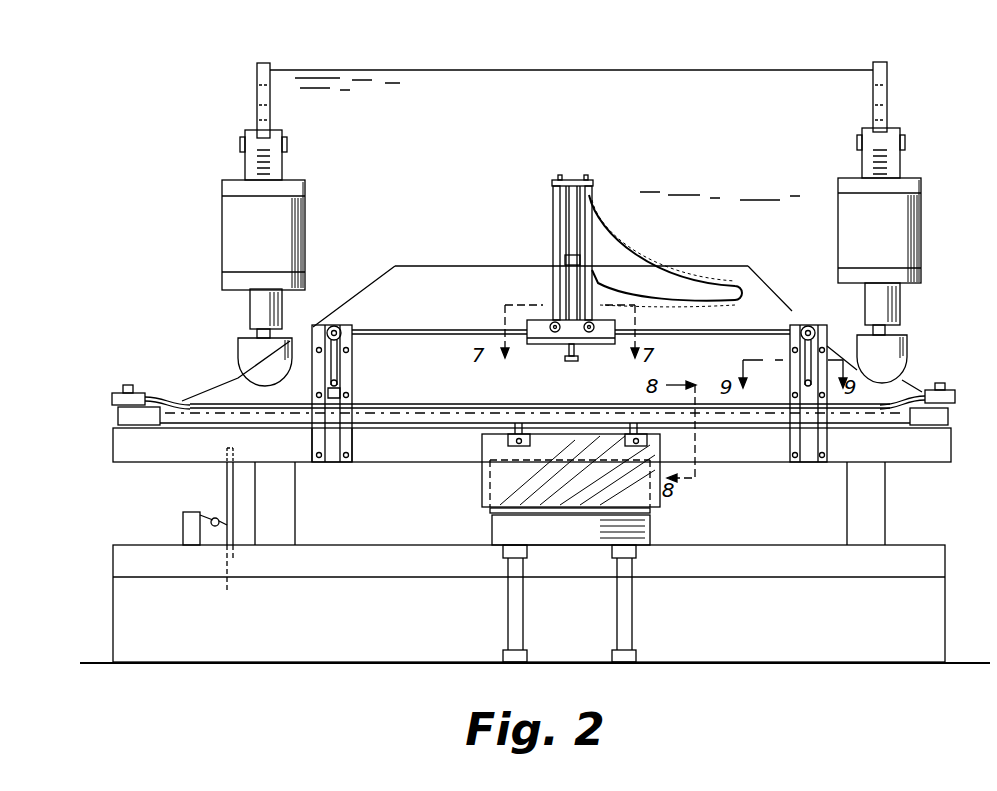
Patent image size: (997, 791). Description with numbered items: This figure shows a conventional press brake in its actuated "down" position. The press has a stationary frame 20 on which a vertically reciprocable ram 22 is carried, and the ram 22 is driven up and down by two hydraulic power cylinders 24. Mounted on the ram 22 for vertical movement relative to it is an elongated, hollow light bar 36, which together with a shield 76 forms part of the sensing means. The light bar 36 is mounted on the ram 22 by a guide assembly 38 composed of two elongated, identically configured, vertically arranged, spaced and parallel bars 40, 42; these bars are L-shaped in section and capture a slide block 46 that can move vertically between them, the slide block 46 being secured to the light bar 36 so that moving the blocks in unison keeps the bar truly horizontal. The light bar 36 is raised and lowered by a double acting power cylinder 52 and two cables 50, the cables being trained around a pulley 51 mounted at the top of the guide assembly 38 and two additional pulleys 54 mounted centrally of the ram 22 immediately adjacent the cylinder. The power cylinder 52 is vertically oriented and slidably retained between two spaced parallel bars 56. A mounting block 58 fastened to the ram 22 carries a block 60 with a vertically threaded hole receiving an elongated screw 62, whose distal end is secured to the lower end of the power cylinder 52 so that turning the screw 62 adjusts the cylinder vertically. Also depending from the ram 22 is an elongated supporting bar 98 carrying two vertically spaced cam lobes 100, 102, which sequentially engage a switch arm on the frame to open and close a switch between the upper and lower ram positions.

The stationary frame 20 is at (112, 597).
The ram 22 is at (420, 265).
The hydraulic power cylinders 24 is at (297, 215).
The light bar 36 is at (421, 408).
The guide assembly 38 is at (360, 360).
The guide bar 40 is at (318, 436).
The guide bar 42 is at (352, 441).
The slide block 46 is at (346, 393).
The cables 50 is at (700, 329).
The pulley 51 is at (320, 322).
The double acting power cylinder 52 is at (538, 216).
The pulleys 54 is at (548, 318).
The bars 56 is at (548, 214).
The mounting block 58 is at (597, 348).
The block 60 is at (551, 346).
The screw 62 is at (572, 362).
The shield 76 is at (482, 478).
The supporting bar 98 is at (233, 490).
The cam lobe 100 is at (218, 518).
The cam lobe 102 is at (238, 577).